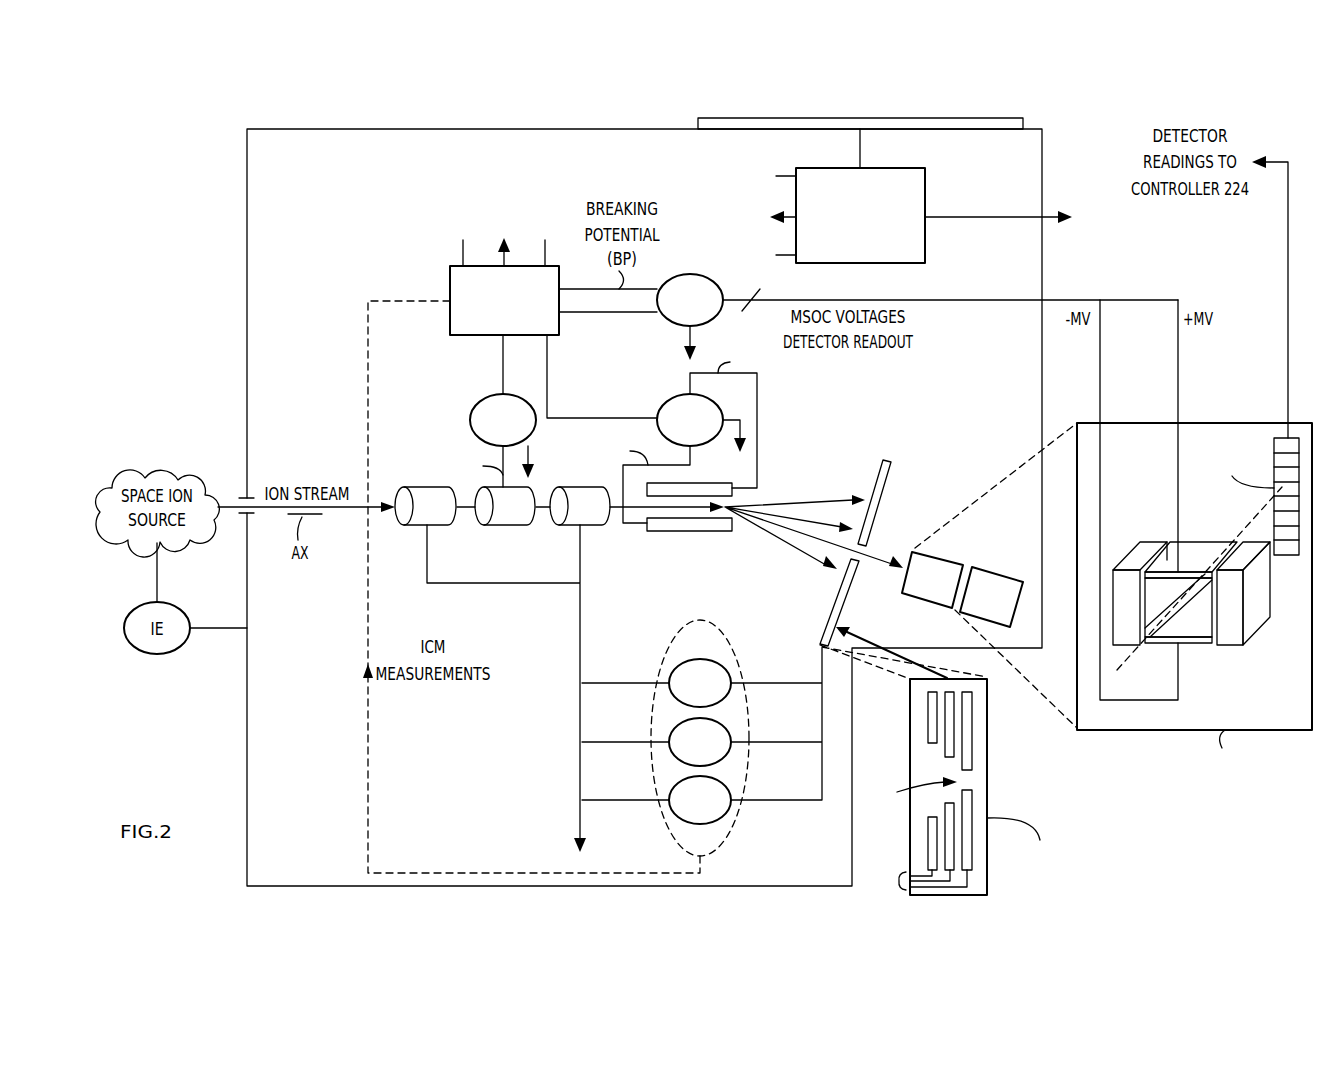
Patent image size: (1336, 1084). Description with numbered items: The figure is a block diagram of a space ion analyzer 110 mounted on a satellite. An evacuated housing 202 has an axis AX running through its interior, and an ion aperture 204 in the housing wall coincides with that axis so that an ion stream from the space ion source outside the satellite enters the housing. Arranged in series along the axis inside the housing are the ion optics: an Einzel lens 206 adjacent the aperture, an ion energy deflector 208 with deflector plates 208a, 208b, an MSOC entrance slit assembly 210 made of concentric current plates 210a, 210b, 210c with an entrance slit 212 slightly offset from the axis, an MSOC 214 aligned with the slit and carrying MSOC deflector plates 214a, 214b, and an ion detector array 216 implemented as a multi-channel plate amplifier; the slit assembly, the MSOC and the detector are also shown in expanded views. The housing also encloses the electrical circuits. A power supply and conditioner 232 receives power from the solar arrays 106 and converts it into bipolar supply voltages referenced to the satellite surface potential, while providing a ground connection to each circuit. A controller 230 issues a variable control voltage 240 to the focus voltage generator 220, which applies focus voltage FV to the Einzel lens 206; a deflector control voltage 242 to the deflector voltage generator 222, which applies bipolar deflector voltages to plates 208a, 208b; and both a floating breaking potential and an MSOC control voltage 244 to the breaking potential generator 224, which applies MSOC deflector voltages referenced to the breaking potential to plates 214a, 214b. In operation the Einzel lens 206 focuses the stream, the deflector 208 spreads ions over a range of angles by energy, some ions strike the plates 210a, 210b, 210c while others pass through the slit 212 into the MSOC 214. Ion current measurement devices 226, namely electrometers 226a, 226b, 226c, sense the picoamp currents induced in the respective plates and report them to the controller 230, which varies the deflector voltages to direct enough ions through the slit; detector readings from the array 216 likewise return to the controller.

The ion analyzer 110 is at (206, 174).
The solar arrays 106 is at (990, 118).
The housing 202 is at (247, 387).
The ion aperture 204 is at (262, 484).
The Einzel lens 206 is at (400, 472).
The ion energy deflector 208 is at (684, 521).
The deflector plate 208a is at (709, 483).
The deflector plate 208b is at (732, 526).
The MSOC entrance slit assembly 210 is at (905, 660).
The concentric current plate 210a is at (928, 718).
The concentric current plate 210b is at (945, 750).
The concentric current plate 210c is at (972, 710).
The entrance slit 212 is at (915, 789).
The MSOC 214 is at (1096, 548).
The MSOC deflector plate 214a is at (1207, 543).
The MSOC deflector plate 214b is at (1205, 645).
The ion detector array 216 is at (998, 569).
The focus voltage generator 220 is at (470, 420).
The deflector voltage generator 222 is at (660, 405).
The breaking potential generator 224 is at (670, 319).
The ion current measurement devices 226 is at (702, 738).
The ion current measurement device 226a is at (730, 672).
The ion current measurement device 226b is at (730, 733).
The ion current measurement device 226c is at (730, 791).
The controller 230 is at (450, 326).
The power supply and conditioner 232 is at (916, 168).
The control voltage 240 is at (503, 381).
The deflector control voltage 242 is at (590, 418).
The MSOC control voltage 244 is at (621, 312).